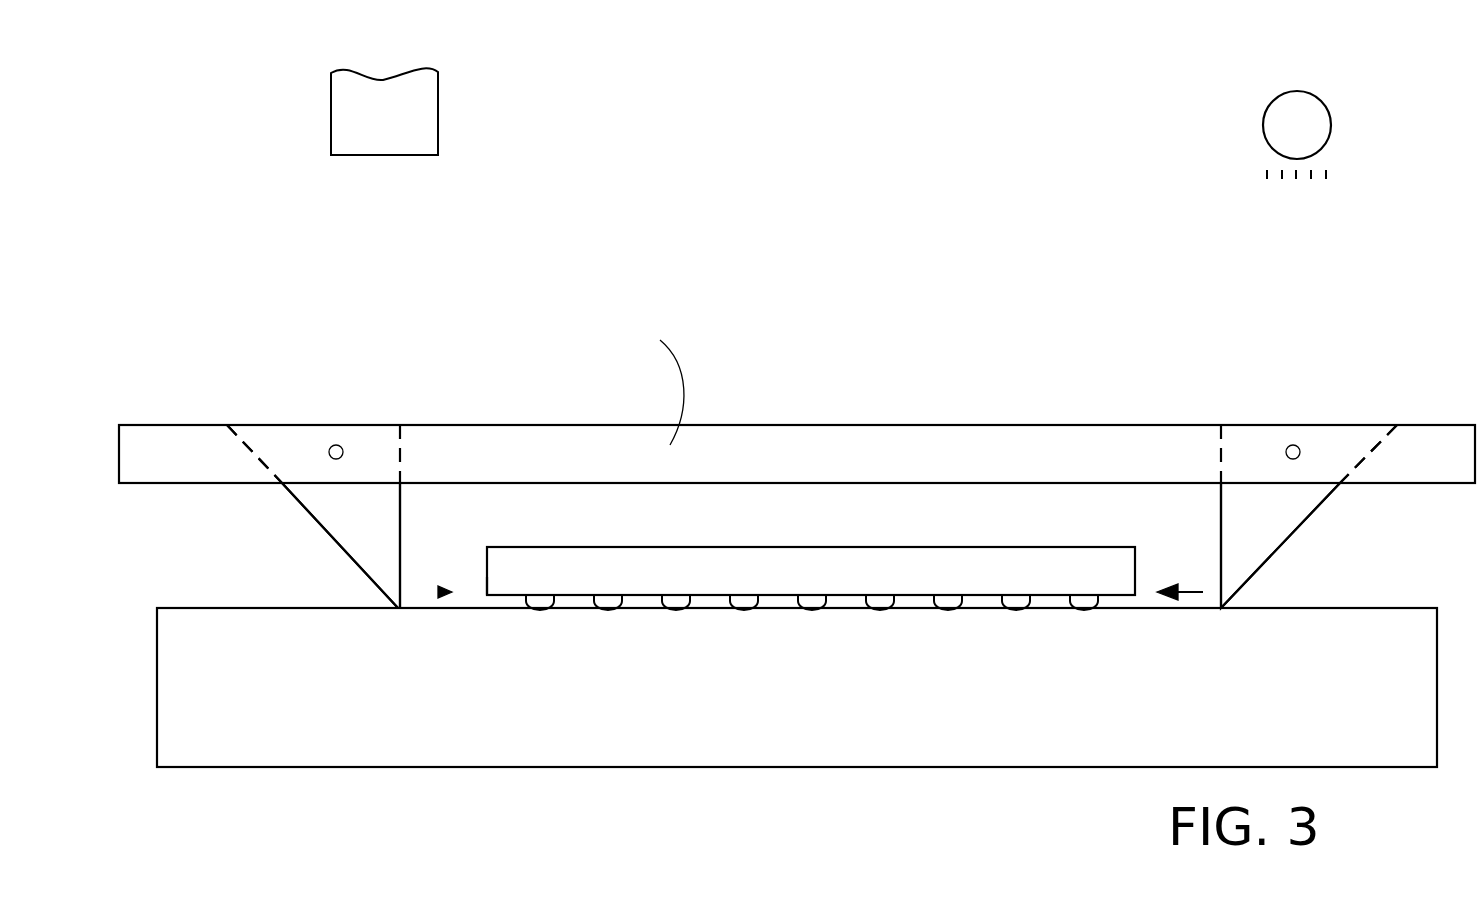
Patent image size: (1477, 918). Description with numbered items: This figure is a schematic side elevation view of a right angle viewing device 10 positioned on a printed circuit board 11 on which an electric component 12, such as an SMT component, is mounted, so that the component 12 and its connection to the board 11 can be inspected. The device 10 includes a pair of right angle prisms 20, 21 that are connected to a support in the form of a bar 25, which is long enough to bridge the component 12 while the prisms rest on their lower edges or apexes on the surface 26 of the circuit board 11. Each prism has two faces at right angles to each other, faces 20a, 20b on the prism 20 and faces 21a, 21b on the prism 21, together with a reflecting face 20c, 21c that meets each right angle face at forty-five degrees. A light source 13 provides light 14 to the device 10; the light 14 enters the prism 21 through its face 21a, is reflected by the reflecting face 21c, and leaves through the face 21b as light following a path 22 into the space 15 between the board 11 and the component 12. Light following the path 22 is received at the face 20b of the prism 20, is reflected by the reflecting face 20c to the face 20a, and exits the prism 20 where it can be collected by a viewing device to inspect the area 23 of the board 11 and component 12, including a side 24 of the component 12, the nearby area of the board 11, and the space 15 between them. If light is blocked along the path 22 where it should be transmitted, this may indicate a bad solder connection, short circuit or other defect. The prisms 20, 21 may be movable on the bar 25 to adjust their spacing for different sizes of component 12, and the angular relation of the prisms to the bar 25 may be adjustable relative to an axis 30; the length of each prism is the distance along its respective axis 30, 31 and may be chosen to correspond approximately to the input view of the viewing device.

The right angle viewing device 10 is at (531, 425).
The printed circuit board 11 is at (840, 743).
The electric component 12 is at (764, 571).
The light source 13 is at (1310, 119).
The light 14 is at (1340, 174).
The space 15 is at (1117, 602).
The prism 20 is at (345, 512).
The prism face 20a is at (300, 424).
The prism face 20b is at (402, 542).
The reflecting face 20c is at (335, 543).
The prism 21 is at (1253, 533).
The prism face 21a is at (1293, 424).
The prism face 21b is at (1219, 530).
The reflecting face 21c is at (1313, 510).
The path 22 is at (1203, 594).
The area 23 is at (440, 592).
The side 24 is at (485, 577).
The bar 25 is at (656, 383).
The surface 26 is at (498, 603).
The axis 30 is at (336, 445).
The axis 31 is at (1303, 450).